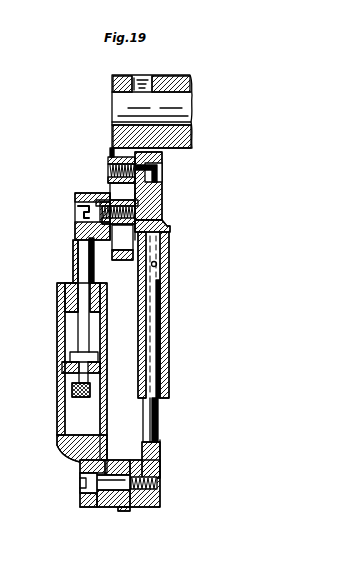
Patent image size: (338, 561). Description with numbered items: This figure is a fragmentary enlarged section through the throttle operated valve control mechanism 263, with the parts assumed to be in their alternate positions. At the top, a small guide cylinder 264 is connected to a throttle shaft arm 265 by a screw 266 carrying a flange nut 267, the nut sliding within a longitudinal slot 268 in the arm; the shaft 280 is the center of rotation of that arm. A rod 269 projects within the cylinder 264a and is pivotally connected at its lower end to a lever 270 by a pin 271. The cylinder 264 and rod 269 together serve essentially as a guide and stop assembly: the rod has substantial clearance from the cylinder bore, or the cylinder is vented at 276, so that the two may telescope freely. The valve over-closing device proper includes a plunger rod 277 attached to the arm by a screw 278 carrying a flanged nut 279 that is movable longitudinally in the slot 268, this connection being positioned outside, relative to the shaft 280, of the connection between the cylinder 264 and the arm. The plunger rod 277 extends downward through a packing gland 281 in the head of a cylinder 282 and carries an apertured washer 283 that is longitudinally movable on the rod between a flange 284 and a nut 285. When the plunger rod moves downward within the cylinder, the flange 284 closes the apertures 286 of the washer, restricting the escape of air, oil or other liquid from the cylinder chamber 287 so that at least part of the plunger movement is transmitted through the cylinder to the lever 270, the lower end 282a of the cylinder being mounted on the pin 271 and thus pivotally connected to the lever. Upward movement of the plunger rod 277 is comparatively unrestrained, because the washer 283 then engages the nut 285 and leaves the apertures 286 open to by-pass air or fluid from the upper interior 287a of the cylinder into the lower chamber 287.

The throttle operated valve control mechanism 263 is at (70, 218).
The guide cylinder 264 is at (169, 293).
The cylinder 264a is at (172, 266).
The throttle shaft arm 265 is at (117, 258).
The screw 266 is at (162, 168).
The flange nut 267 is at (104, 158).
The longitudinal slot 268 is at (120, 240).
The rod 269 is at (166, 375).
The lever 270 is at (110, 507).
The pin 271 is at (125, 507).
The vent 276 is at (170, 230).
The plunger rod 277 is at (90, 245).
The screw 278 is at (105, 200).
The flanged nut 279 is at (163, 200).
The shaft 280 is at (135, 108).
The packing gland 281 is at (65, 299).
The cylinder 282 is at (77, 323).
The lower end of the cylinder 282a is at (80, 465).
The apertured washer 283 is at (65, 367).
The flange 284 is at (72, 358).
The nut 285 is at (75, 385).
The apertures 286 is at (72, 388).
The cylinder chamber 287 is at (77, 412).
The upper interior of the cylinder 287a is at (70, 318).